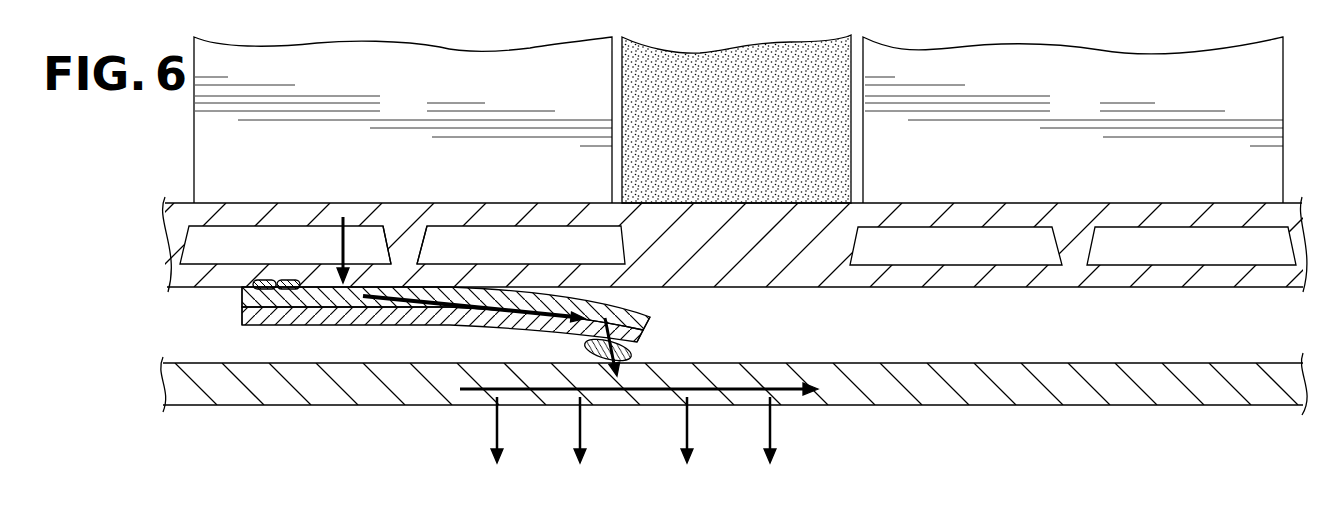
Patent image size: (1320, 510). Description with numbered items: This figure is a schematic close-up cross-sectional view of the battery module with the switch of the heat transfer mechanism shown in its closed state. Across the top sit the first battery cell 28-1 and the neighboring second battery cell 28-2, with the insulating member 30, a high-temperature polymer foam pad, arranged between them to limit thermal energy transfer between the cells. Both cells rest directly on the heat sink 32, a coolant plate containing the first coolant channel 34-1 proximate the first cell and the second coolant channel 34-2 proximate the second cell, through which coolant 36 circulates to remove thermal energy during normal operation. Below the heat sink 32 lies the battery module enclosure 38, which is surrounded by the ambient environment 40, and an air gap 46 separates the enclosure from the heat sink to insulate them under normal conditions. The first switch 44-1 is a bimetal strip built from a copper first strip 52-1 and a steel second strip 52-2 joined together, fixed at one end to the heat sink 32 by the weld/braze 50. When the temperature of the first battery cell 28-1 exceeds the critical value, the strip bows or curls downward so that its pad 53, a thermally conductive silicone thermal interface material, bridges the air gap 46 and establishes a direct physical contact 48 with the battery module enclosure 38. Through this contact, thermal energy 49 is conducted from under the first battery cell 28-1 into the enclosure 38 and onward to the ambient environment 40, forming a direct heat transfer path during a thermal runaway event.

The first battery cell 28-1 is at (425, 111).
The second battery cell 28-2 is at (1099, 111).
The insulating member 30 is at (750, 124).
The heat sink 32 is at (1021, 202).
The first coolant channel 34-1 is at (290, 232).
The second coolant channel 34-2 is at (888, 230).
The coolant 36 is at (389, 238).
The battery module enclosure 38 is at (1033, 394).
The ambient environment 40 is at (803, 451).
The first switch 44-1 is at (446, 309).
The air gap 46 is at (212, 323).
The direct physical contact 48 is at (640, 358).
The thermal energy 49 is at (581, 420).
The weld/braze 50 is at (283, 280).
The first strip 52-1 is at (546, 302).
The second strip 52-2 is at (441, 316).
The pad 53 is at (638, 357).